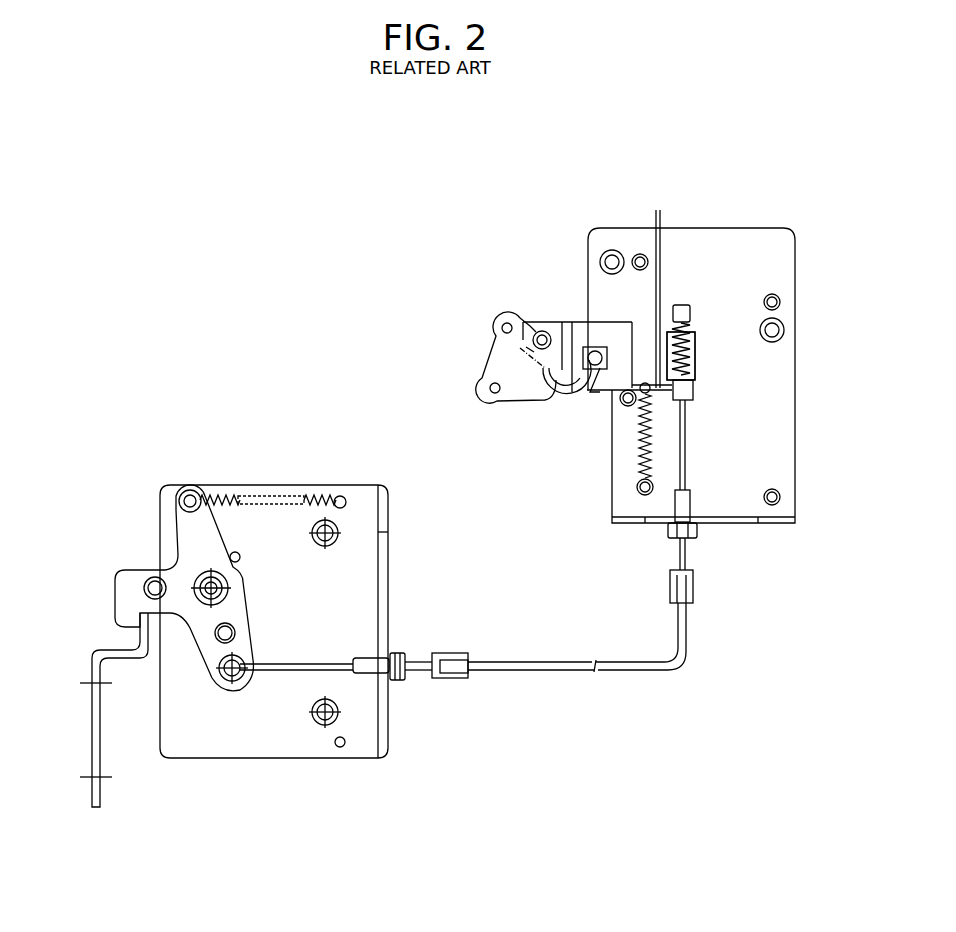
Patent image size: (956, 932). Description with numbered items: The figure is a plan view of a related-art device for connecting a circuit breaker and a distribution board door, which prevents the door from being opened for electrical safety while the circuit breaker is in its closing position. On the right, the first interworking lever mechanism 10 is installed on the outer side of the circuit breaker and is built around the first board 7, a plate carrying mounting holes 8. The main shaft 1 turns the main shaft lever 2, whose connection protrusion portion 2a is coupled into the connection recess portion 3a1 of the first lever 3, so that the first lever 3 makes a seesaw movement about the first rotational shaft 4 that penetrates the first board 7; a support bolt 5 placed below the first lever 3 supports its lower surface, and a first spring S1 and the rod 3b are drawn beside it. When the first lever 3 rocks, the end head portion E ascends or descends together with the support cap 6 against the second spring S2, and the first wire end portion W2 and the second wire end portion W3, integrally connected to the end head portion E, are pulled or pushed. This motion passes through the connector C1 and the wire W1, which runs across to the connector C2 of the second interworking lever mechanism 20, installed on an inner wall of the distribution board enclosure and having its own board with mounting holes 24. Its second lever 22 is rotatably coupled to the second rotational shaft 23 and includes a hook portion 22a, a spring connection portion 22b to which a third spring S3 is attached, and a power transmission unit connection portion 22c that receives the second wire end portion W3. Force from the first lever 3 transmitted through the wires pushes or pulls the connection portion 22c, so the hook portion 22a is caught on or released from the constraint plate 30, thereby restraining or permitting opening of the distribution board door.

The main shaft 1 is at (556, 392).
The main shaft lever 2 is at (492, 330).
The connection protrusion portion 2a is at (540, 333).
The first lever 3 is at (577, 322).
The connection recess portion 3a1 is at (526, 347).
The latch rod 3b is at (655, 289).
The first rotational shaft 4 is at (593, 398).
The support bolt 5 is at (624, 406).
The support cap 6 is at (698, 345).
The first board 7 is at (790, 415).
The mounting hole 8 is at (784, 330).
The latch unit 10 is at (438, 290).
The operating unit 20 is at (162, 440).
The operating lever 22 is at (108, 568).
The lever arm 22a is at (120, 598).
The lever upper end 22b is at (182, 518).
The lever lower end 22c is at (206, 642).
The lever pivot 23 is at (200, 580).
The mounting holes 24 is at (320, 546).
The hanger bracket 30 is at (95, 672).
The first cable connector C1 is at (690, 548).
The second cable connector C2 is at (418, 674).
The end head portion E is at (679, 300).
The first spring S1 is at (640, 468).
The second spring S2 is at (698, 362).
The third spring S3 is at (224, 490).
The power transmission unit W1 is at (528, 672).
The first wire end portion W2 is at (686, 440).
The second wire end portion W3 is at (270, 674).